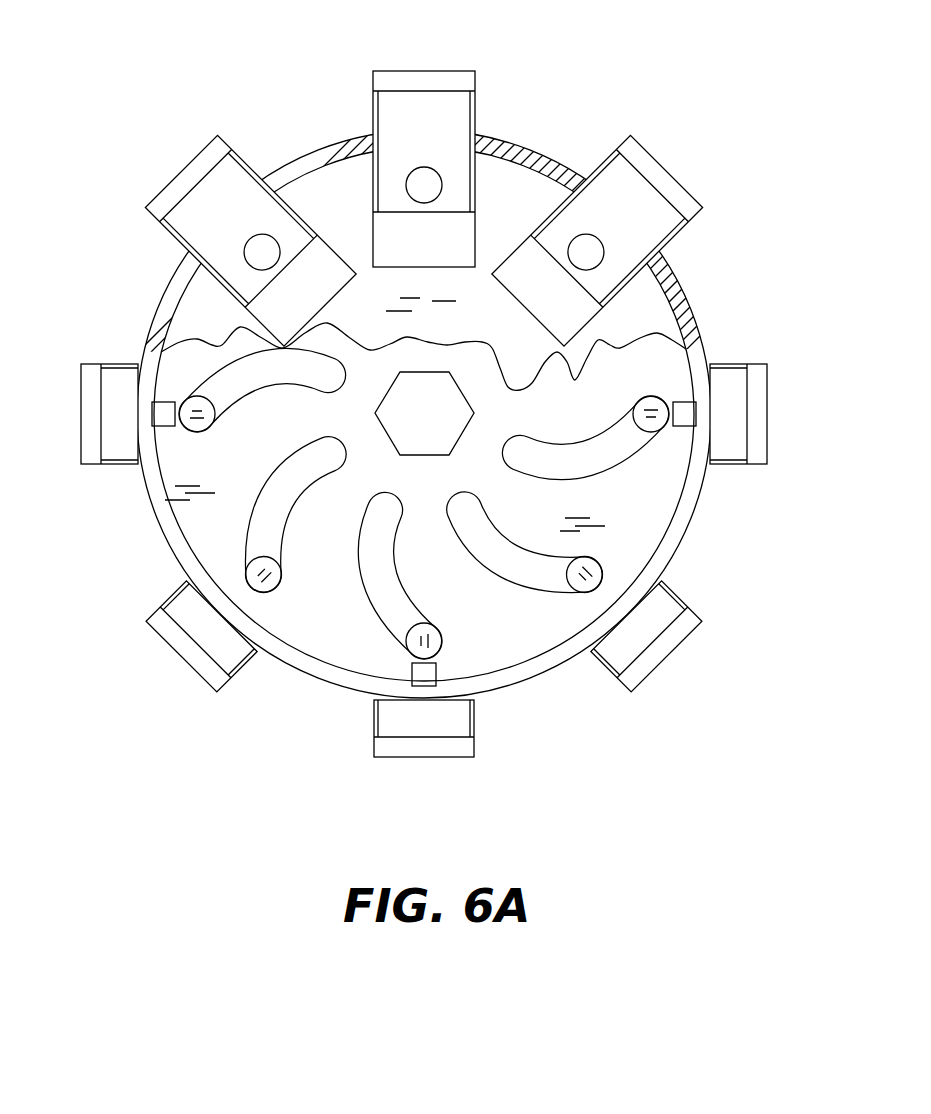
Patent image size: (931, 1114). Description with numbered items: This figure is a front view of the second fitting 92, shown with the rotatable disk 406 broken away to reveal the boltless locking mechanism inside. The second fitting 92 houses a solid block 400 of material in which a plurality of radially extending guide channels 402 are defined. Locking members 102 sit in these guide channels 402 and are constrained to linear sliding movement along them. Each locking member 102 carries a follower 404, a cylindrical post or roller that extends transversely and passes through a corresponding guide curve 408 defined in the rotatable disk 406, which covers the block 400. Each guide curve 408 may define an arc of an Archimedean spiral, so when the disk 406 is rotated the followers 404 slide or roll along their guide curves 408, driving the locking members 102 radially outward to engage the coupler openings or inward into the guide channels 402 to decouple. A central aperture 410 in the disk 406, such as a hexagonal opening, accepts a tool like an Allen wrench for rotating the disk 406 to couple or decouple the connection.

The second fitting 92 is at (697, 510).
The locking members 102 is at (447, 70).
The solid block 400 is at (522, 170).
The guide channels 402 is at (332, 228).
The follower 404 is at (428, 167).
The rotatable disk 406 is at (323, 633).
The guide curves 408 is at (430, 596).
The central aperture 410 is at (350, 413).